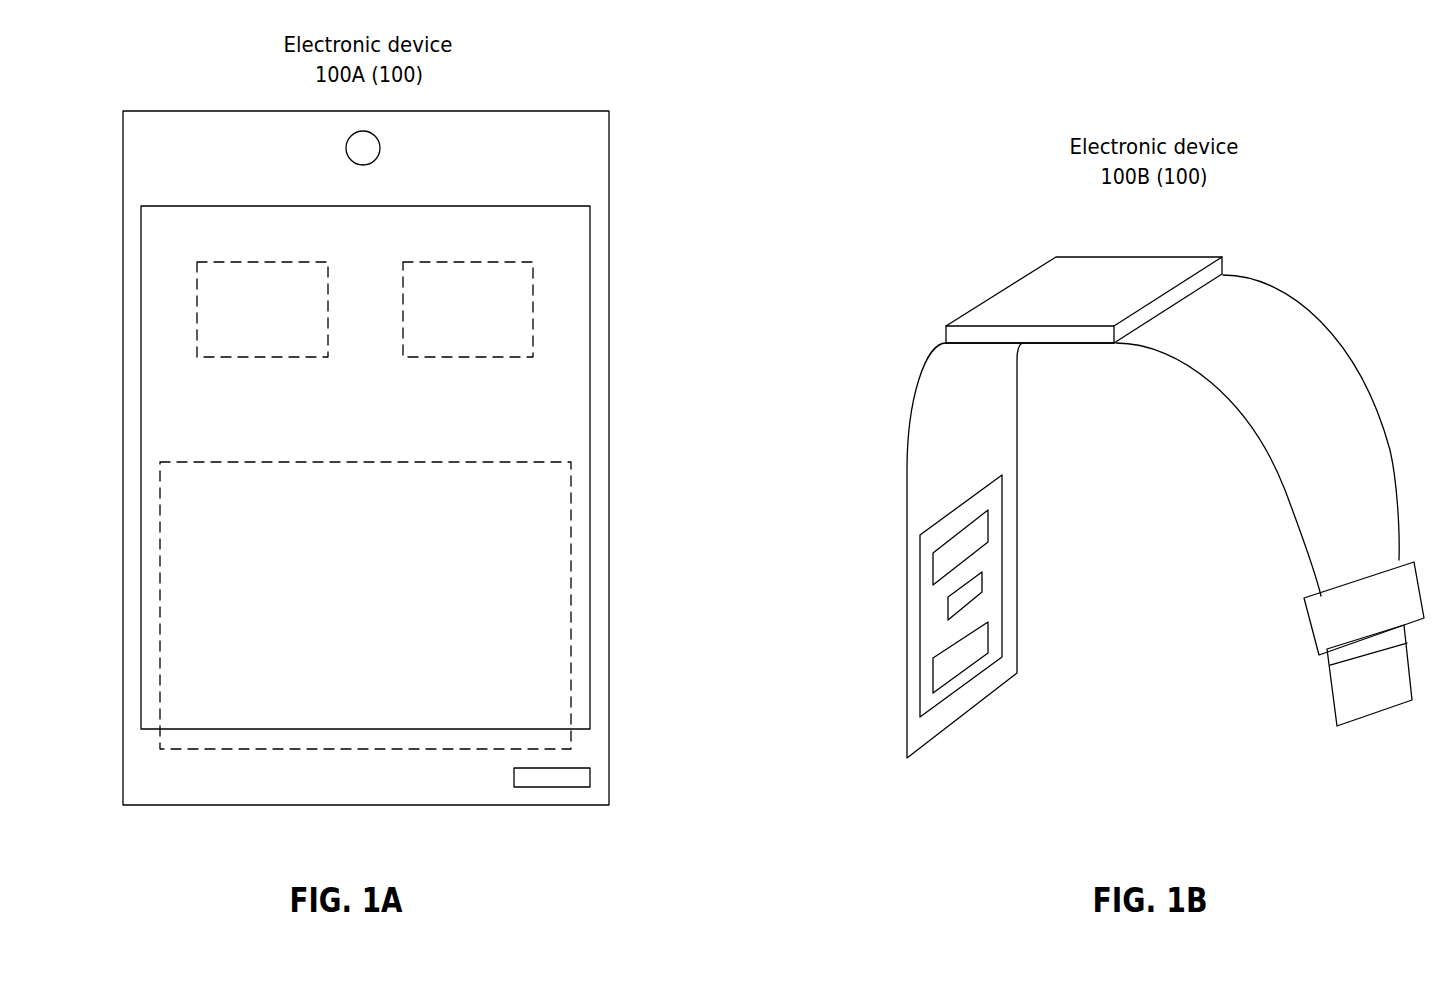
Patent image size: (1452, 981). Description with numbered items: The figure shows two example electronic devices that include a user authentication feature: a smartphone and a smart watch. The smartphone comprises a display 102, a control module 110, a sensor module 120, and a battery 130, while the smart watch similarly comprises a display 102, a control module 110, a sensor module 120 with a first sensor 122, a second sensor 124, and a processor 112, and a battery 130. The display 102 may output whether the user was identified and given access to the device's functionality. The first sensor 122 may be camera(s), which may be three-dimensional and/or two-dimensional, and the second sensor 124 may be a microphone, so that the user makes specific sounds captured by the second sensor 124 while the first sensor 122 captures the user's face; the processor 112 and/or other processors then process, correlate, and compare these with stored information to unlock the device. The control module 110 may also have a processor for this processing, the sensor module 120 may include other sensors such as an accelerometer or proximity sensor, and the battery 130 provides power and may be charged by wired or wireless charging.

In FIG. 1A, the display 102 is at (870, 200).
In FIG. 1B, the display 102 is at (1044, 282).
In FIG. 1A, the control module 110 is at (497, 298).
In FIG. 1B, the control module 110 is at (1086, 343).
In FIG. 1A, the processor 112 is at (232, 292).
In FIG. 1B, the processor 112 is at (982, 573).
In FIG. 1A, the sensor module 120 is at (419, 427).
In FIG. 1B, the sensor module 120 is at (918, 618).
In FIG. 1A, the first sensor 122 is at (377, 135).
In FIG. 1B, the first sensor 122 is at (933, 552).
In FIG. 1A, the second sensor 124 is at (758, 727).
In FIG. 1B, the second sensor 124 is at (933, 663).
In FIG. 1A, the battery 130 is at (533, 487).
In FIG. 1B, the battery 130 is at (1001, 343).